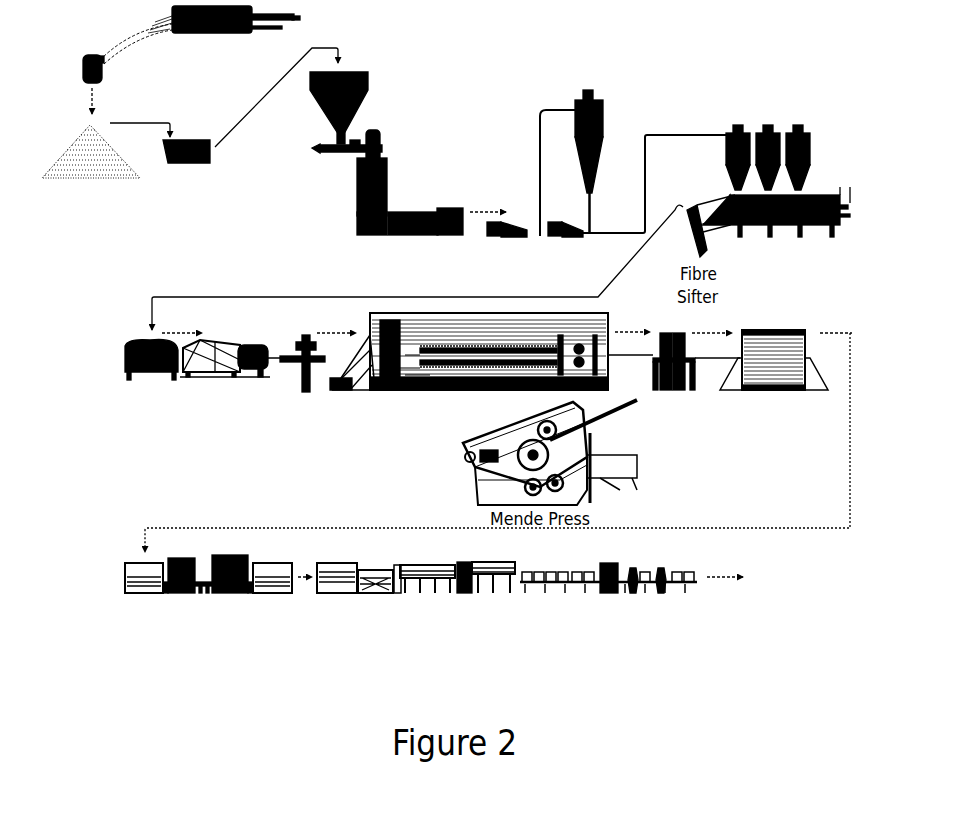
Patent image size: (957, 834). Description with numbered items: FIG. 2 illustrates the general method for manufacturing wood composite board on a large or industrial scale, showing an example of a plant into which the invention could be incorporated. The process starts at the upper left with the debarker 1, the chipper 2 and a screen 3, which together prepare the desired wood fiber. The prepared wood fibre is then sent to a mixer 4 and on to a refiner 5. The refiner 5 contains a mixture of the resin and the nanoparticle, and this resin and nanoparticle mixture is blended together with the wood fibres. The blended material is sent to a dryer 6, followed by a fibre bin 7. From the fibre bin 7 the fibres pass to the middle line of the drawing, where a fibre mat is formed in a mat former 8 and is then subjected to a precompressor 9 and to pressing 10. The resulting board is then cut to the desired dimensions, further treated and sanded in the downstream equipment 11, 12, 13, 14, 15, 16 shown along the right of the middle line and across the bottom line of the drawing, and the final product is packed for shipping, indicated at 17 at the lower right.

The debarker 1 is at (224, 44).
The chipper 2 is at (125, 83).
The screen 3 is at (188, 174).
The mixer 4 is at (348, 112).
The refiner 5 is at (438, 205).
The dryer 6 is at (578, 185).
The fibre bin 7 is at (776, 205).
The mat former 8 is at (120, 350).
The precompressor 9 is at (224, 388).
The pressing 10 is at (469, 408).
The saws 11 is at (674, 385).
The cooler 12 is at (774, 383).
The sander 13 is at (208, 598).
The cut to size station 14 is at (368, 602).
The panel saw 15 is at (478, 602).
The packing station 16 is at (608, 602).
The worldwide shipping 17 is at (794, 590).